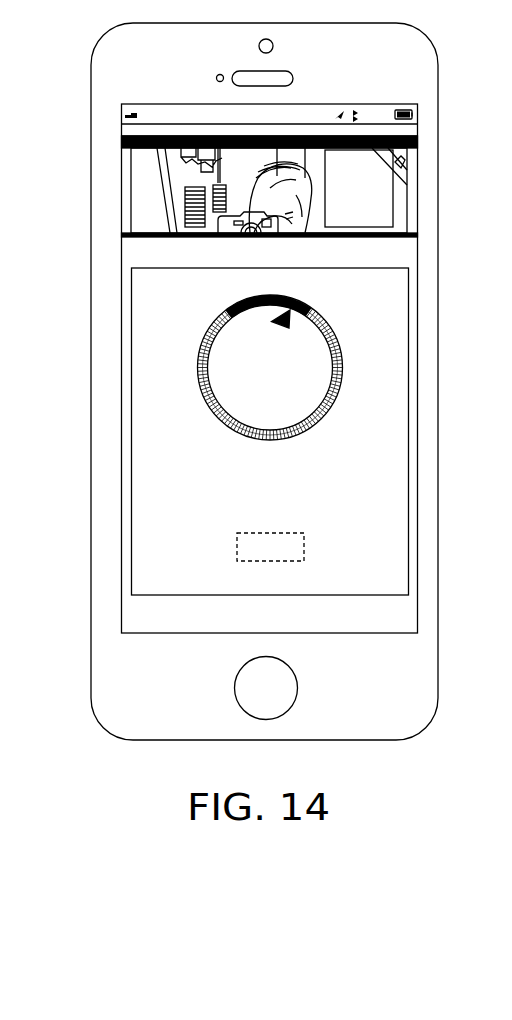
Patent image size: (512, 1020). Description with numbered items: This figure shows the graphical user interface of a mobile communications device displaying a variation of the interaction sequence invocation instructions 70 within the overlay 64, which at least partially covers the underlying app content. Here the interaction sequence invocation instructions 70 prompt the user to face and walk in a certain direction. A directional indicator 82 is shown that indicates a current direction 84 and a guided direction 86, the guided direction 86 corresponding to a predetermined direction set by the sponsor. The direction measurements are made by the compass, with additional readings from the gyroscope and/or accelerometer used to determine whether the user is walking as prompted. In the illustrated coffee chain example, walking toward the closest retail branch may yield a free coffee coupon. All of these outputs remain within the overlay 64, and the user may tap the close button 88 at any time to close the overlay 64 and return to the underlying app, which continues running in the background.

The overlay 64 is at (157, 612).
The interaction sequence invocation instructions 70 is at (262, 367).
The directional indicator 82 is at (343, 372).
The current direction 84 is at (291, 322).
The guided direction 86 is at (313, 313).
The close button 88 is at (410, 252).